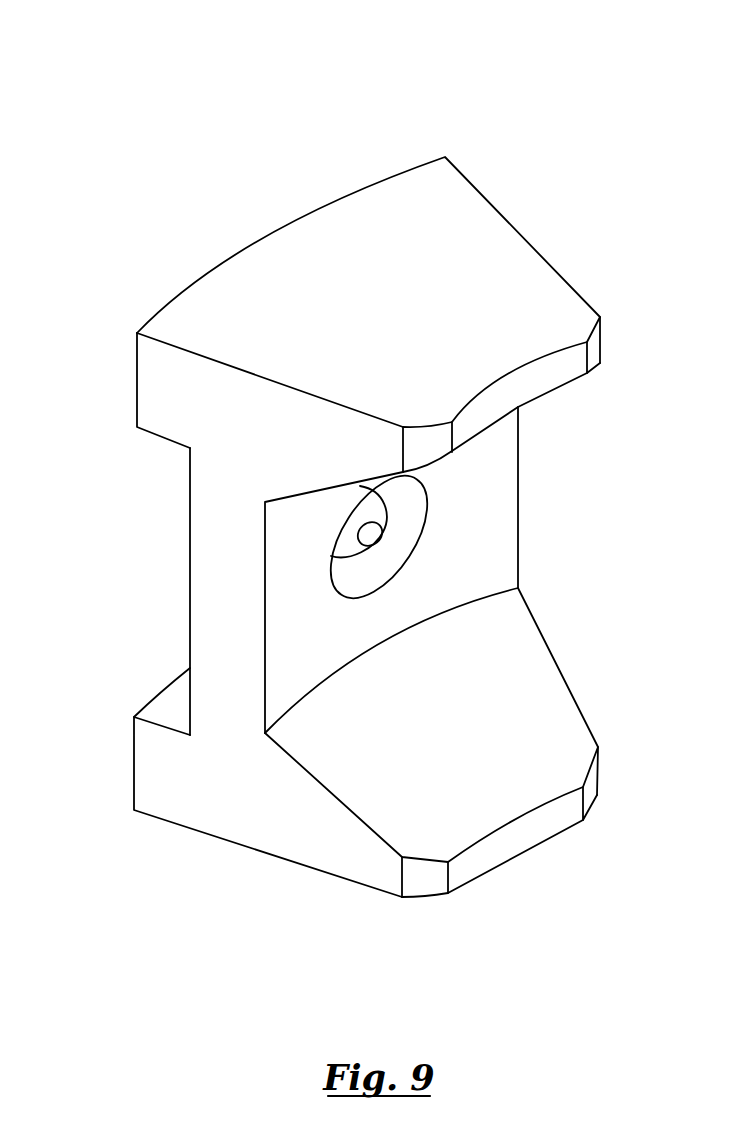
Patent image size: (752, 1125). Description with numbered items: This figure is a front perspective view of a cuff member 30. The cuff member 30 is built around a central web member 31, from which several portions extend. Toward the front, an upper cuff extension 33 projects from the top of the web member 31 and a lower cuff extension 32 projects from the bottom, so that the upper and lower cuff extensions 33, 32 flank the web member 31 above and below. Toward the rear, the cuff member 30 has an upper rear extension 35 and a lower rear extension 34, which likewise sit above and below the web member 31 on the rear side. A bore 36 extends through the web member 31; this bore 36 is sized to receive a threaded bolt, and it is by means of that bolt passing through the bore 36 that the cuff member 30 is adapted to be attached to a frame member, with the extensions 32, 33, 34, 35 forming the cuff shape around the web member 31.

The cuff member 30 is at (319, 450).
The web member 31 is at (299, 571).
The lower cuff extension 32 is at (340, 842).
The upper cuff extension 33 is at (358, 445).
The lower rear extension 34 is at (148, 766).
The upper rear extension 35 is at (150, 403).
The bore 36 is at (377, 521).